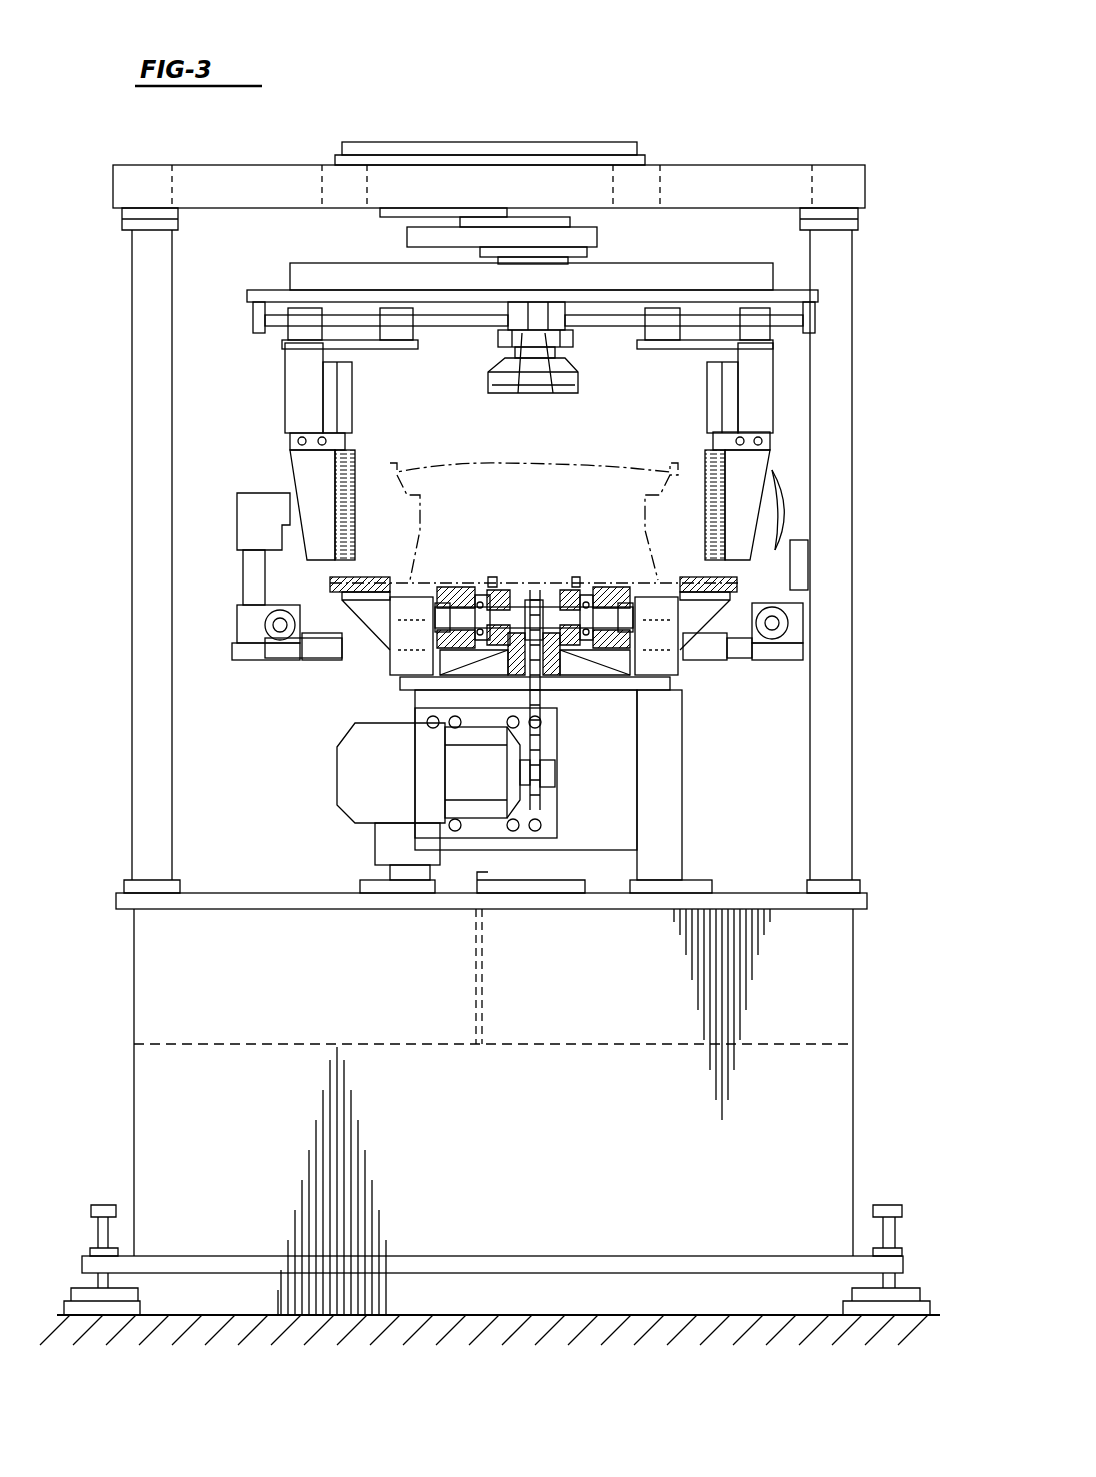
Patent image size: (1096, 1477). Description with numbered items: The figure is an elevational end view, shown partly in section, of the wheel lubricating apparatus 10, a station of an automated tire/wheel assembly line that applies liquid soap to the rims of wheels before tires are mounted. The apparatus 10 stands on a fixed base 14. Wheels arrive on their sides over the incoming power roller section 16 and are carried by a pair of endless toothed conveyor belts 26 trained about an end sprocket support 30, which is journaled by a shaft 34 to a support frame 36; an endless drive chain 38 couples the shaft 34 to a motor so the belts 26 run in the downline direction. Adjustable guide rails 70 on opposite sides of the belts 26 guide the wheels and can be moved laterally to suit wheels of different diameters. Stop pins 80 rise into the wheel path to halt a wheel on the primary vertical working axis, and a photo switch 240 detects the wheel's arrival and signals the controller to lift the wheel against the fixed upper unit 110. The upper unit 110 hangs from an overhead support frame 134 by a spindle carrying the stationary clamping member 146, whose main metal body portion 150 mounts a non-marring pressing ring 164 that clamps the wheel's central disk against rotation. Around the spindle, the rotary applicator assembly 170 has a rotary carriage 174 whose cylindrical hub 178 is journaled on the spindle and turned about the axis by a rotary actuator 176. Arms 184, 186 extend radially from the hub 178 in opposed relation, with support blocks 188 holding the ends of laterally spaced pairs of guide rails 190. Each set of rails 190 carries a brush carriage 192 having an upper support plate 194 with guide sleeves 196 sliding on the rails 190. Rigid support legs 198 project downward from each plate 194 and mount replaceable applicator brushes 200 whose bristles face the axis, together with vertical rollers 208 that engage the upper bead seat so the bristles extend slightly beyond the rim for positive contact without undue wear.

The wheel lubricating apparatus 10 is at (865, 108).
The fixed base 14 is at (128, 960).
The incoming power roller section 16 is at (385, 680).
The endless toothed conveyor belts 26 is at (447, 585).
The end sprocket support 30 is at (410, 600).
The shaft 34 is at (640, 648).
The support frame 36 is at (680, 798).
The endless drive belt or chain 38 is at (540, 690).
The adjustable guide rails 70 is at (357, 650).
The stop pins 80 is at (575, 577).
The fixed upper unit 110 is at (525, 422).
The overhead support frame 134 is at (713, 170).
The clamping member 146 is at (572, 393).
The main metal body portion 150 is at (493, 383).
The pressing ring 164 is at (490, 400).
The rotary applicator assembly 170 is at (610, 243).
The rotary carriage 174 is at (745, 255).
The rotary actuator 176 is at (577, 142).
The cylindrical hub 178 is at (570, 337).
The arm 184 is at (318, 272).
The arm 186 is at (773, 280).
The support blocks 188 is at (258, 322).
The guide rails 190 is at (437, 300).
The brush carriage 192 is at (280, 405).
The upper support plate 194 is at (310, 345).
The guide sleeves 196 is at (297, 315).
The rigid support legs 198 is at (293, 430).
The applicator brushes 200 is at (325, 478).
The vertical rollers 208 is at (345, 400).
The photo switch 240 is at (237, 598).